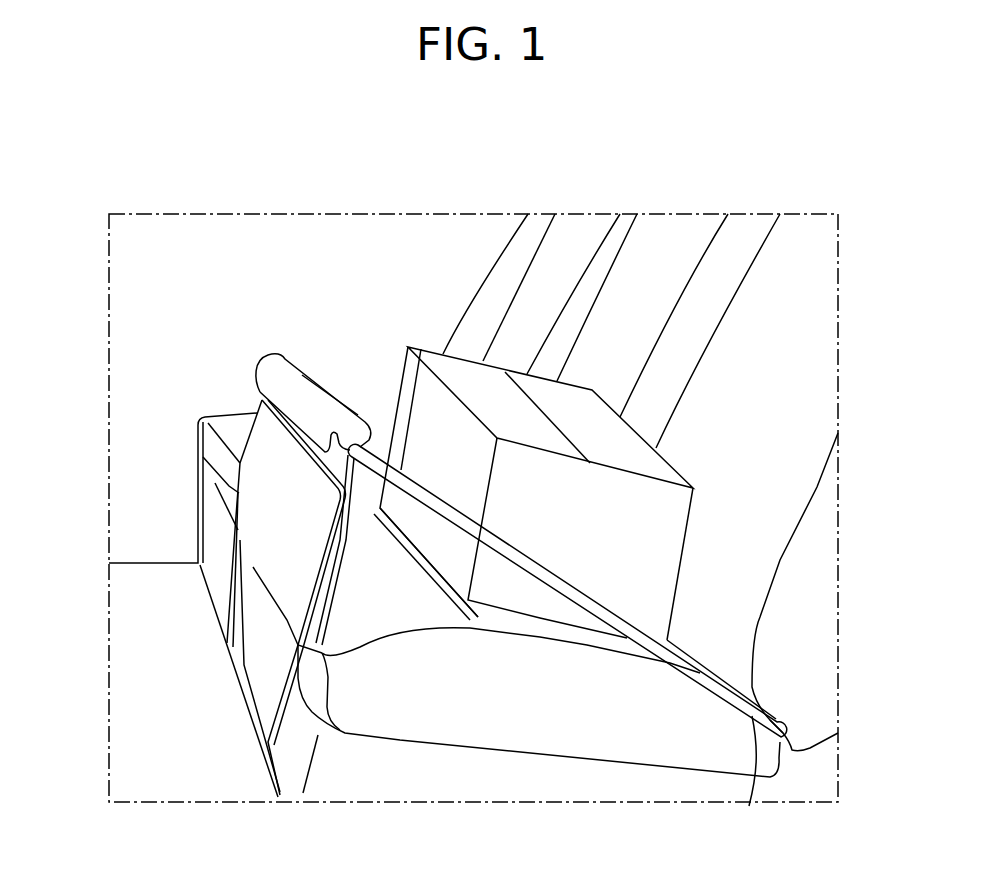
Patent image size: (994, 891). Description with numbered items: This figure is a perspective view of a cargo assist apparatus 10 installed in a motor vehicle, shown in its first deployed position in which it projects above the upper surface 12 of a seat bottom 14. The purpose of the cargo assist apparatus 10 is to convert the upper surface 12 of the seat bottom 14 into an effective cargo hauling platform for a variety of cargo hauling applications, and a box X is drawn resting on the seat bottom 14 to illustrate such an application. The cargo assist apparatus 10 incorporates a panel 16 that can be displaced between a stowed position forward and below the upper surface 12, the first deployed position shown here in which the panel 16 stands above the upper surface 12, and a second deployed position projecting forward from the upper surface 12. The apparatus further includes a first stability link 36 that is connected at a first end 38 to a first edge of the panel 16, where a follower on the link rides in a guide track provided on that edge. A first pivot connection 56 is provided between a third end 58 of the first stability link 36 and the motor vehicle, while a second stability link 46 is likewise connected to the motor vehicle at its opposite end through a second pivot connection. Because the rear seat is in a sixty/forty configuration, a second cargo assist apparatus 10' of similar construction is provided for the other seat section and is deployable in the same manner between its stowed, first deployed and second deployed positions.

The cargo assist apparatus 10 is at (186, 605).
The second cargo assist apparatus 10' is at (136, 538).
The upper surface 12 is at (387, 593).
The seat bottom 14 is at (600, 737).
The panel 16 is at (258, 490).
The first stability link 36 is at (574, 598).
The first end 38 is at (423, 352).
The second stability link 46 is at (345, 405).
The first pivot connection 56 is at (783, 730).
The third end 58 is at (755, 782).
The box X is at (650, 512).